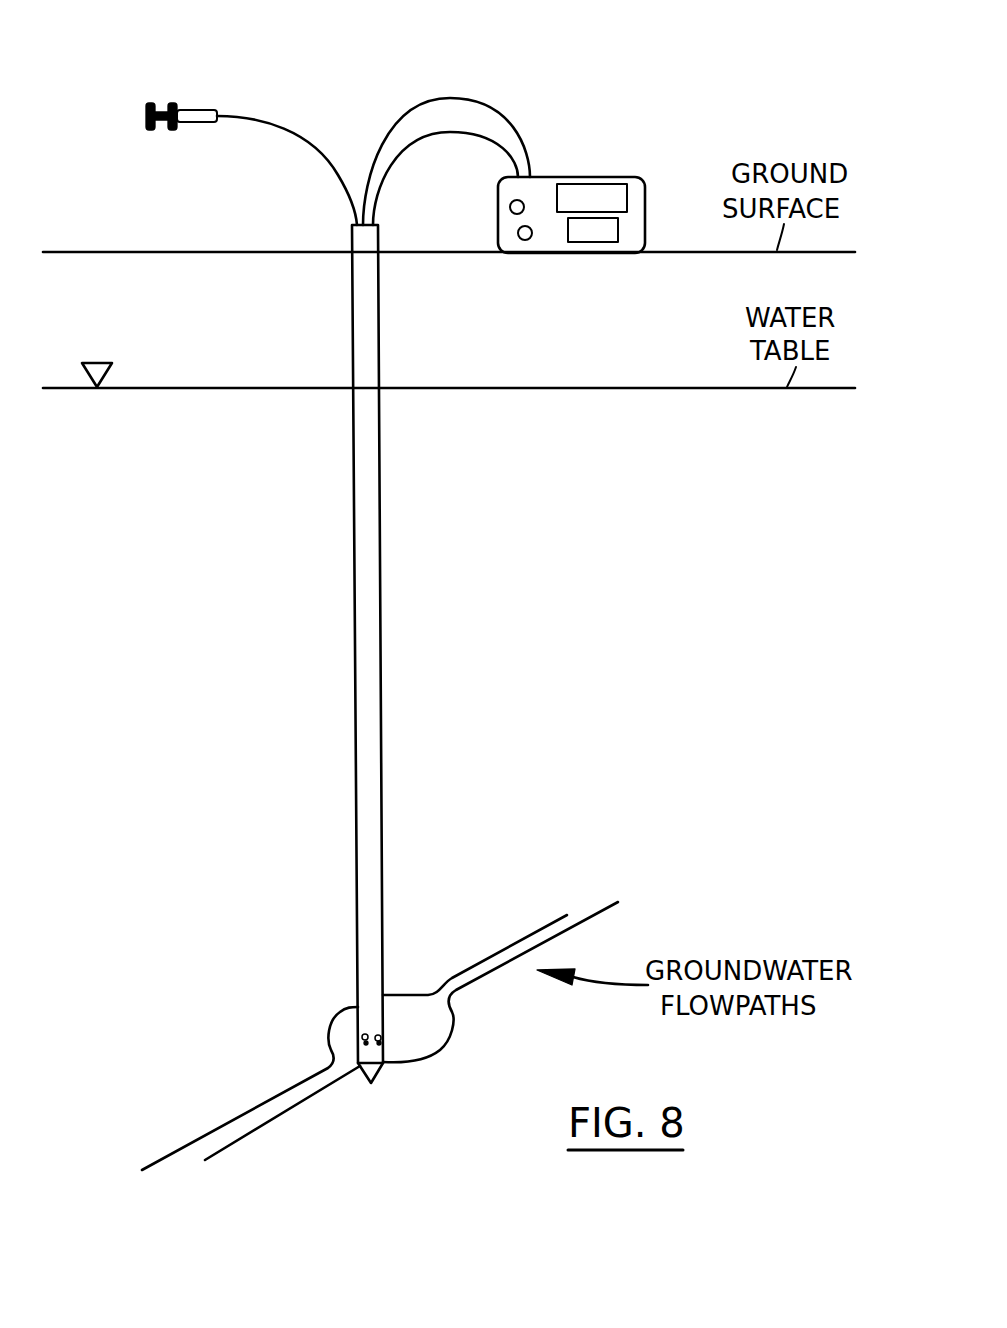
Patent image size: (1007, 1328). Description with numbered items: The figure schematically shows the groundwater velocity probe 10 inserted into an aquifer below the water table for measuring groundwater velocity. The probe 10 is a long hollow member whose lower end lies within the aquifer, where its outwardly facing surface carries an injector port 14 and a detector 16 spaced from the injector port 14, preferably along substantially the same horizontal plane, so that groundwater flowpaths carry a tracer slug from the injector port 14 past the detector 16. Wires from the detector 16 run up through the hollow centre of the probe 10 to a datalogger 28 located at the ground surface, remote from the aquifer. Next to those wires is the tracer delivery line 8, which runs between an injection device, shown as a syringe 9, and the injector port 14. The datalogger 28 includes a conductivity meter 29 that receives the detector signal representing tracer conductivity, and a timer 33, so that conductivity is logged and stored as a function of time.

The tracer delivery line 8 is at (296, 130).
The syringe 9 is at (175, 80).
The groundwater velocity probe 10 is at (372, 748).
The injector port 14 is at (363, 1034).
The detector 16 is at (361, 1038).
The datalogger 28 is at (560, 150).
The conductivity meter 29 is at (618, 225).
The timer 33 is at (610, 177).